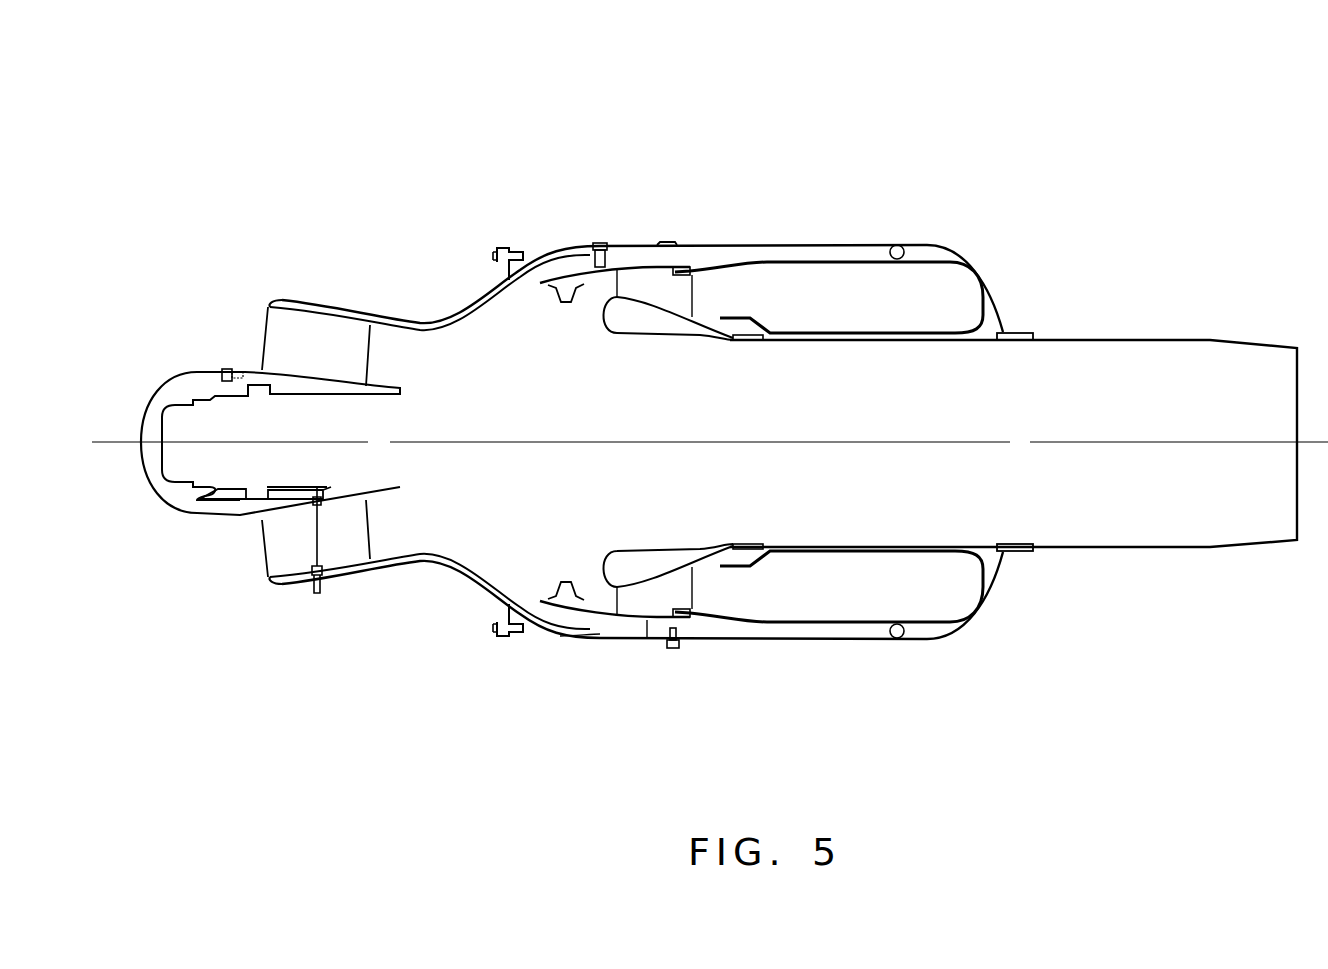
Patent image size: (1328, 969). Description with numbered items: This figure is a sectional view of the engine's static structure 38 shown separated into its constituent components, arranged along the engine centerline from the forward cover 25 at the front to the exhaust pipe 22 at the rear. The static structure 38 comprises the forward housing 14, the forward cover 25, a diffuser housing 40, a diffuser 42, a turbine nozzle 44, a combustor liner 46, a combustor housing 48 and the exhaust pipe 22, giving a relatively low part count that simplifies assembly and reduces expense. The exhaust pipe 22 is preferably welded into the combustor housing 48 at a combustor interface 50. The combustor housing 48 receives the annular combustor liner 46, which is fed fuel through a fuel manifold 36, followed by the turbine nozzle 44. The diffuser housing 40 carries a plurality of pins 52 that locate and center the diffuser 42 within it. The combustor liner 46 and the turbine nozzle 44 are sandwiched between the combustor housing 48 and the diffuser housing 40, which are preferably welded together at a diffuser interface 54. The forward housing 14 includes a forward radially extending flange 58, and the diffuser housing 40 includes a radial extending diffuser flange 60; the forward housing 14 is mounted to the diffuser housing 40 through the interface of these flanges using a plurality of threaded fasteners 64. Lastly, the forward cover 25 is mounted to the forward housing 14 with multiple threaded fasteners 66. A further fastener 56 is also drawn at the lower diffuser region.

The forward housing 14 is at (445, 320).
The exhaust pipe 22 is at (1182, 340).
The forward cover 25 is at (141, 424).
The fuel manifold 36 is at (897, 245).
The static structure 38 is at (863, 128).
The diffuser housing 40 is at (567, 633).
The diffuser 42 is at (593, 633).
The turbine nozzle 44 is at (658, 583).
The combustor liner 46 is at (823, 262).
The combustor housing 48 is at (847, 640).
The combustor interface 50 is at (1017, 330).
The pins 52 is at (598, 243).
The diffuser interface 54 is at (673, 242).
The bolt 56 is at (673, 648).
The forward radially extending flange 58 is at (505, 247).
The radial extending diffuser flange 60 is at (513, 247).
The threaded fasteners 64 is at (492, 255).
The threaded fasteners 66 is at (226, 368).